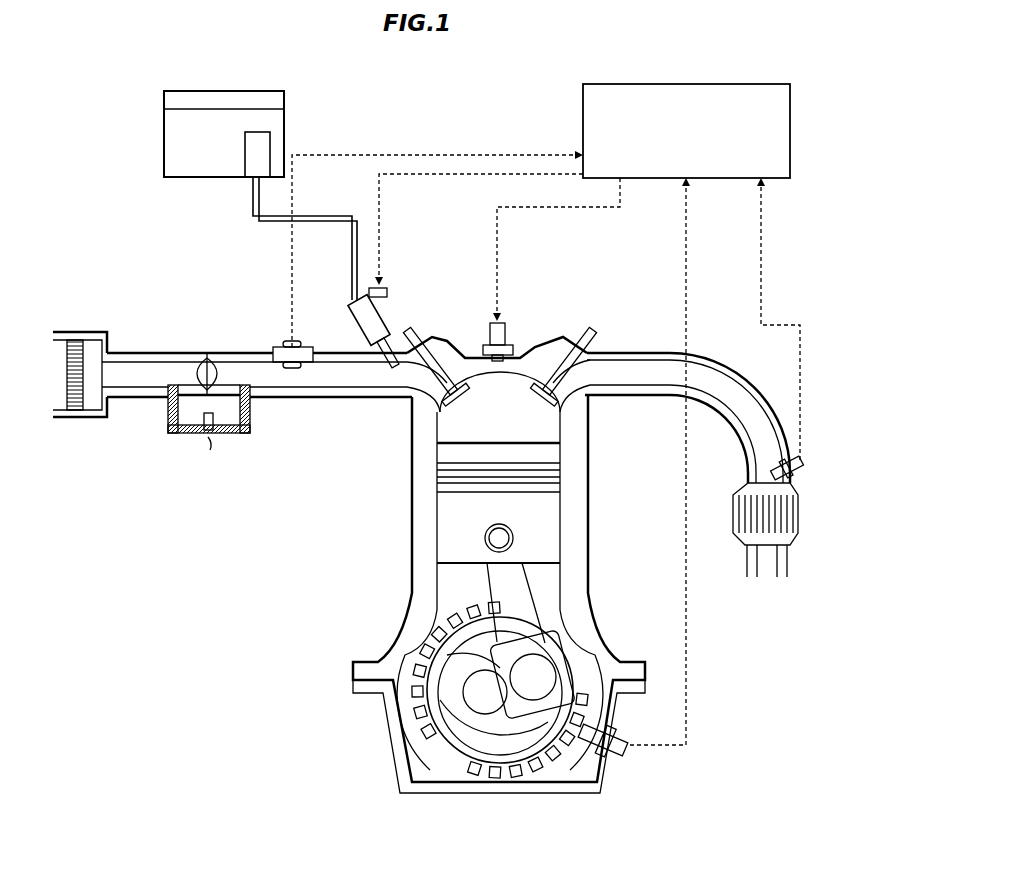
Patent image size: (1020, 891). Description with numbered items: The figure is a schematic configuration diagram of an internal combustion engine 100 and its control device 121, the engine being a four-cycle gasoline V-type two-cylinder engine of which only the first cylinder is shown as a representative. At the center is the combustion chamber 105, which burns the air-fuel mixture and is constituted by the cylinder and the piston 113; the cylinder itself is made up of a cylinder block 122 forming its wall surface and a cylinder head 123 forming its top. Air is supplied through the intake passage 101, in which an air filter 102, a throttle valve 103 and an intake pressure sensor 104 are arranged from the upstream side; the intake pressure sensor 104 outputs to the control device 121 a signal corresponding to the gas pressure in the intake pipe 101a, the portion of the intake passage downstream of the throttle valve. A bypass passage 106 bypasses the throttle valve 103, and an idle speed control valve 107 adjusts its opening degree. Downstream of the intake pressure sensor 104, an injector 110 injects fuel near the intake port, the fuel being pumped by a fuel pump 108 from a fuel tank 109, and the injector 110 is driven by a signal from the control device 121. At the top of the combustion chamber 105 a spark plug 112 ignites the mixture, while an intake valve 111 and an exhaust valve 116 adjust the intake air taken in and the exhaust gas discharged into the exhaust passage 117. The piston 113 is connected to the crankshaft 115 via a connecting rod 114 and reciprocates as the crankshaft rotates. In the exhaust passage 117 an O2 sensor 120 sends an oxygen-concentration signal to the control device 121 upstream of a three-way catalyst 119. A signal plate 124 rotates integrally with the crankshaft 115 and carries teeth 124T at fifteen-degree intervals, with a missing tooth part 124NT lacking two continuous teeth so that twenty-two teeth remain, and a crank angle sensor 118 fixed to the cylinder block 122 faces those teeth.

The internal combustion engine 100 is at (125, 186).
The intake passage 101 is at (122, 372).
The intake pipe 101a is at (332, 378).
The air filter 102 is at (73, 340).
The throttle valve 103 is at (201, 360).
The intake pressure sensor 104 is at (270, 347).
The combustion chamber 105 is at (518, 427).
The bypass passage 106 is at (178, 440).
The idle speed control valve 107 is at (210, 446).
The fuel pump 108 is at (267, 148).
The fuel tank 109 is at (285, 95).
The injector 110 is at (383, 315).
The intake valve 111 is at (412, 333).
The spark plug 112 is at (507, 307).
The piston 113 is at (457, 525).
The connecting rod 114 is at (553, 580).
The crankshaft 115 is at (450, 722).
The exhaust valve 116 is at (594, 322).
The exhaust passage 117 is at (630, 368).
The crank angle sensor 118 is at (615, 757).
The three-way catalyst 119 is at (798, 512).
The O2 sensor 120 is at (800, 477).
The control device 121 is at (790, 125).
The cylinder block 122 is at (575, 463).
The cylinder head 123 is at (455, 357).
The signal plate 124 is at (432, 645).
The missing tooth part 124NT is at (445, 765).
The teeth 124T is at (545, 772).